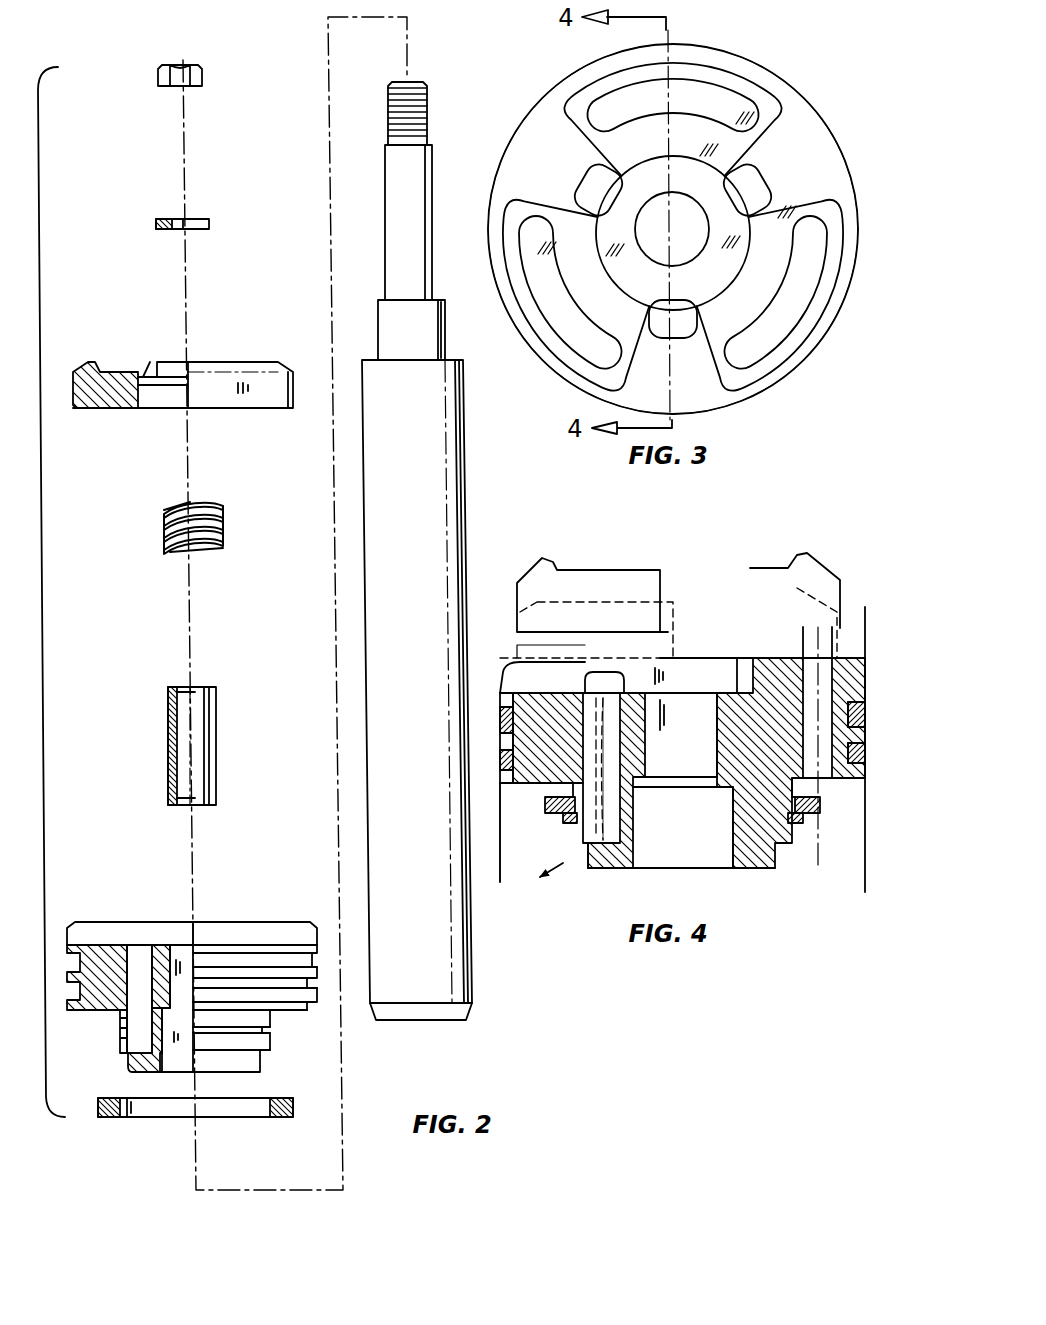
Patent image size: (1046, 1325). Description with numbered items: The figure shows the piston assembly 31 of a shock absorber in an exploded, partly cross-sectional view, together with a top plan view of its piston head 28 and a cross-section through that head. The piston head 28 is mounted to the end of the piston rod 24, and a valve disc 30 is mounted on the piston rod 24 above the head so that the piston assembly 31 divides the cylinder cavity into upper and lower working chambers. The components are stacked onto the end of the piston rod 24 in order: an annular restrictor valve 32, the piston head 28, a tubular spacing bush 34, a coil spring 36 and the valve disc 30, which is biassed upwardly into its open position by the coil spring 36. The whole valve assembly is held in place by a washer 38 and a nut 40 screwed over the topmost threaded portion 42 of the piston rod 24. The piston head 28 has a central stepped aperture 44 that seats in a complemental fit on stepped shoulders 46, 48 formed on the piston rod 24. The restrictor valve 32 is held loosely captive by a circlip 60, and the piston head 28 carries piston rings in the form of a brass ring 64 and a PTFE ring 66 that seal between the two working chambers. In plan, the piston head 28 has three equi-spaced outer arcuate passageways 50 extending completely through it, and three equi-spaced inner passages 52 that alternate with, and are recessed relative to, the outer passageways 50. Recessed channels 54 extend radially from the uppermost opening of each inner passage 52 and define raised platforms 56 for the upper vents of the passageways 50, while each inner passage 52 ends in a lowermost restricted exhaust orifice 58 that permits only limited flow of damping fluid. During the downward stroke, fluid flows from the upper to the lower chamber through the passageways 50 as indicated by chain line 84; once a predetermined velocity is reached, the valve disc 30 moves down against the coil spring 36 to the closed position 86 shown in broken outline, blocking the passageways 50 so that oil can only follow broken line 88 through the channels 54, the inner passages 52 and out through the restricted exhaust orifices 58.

In FIG. 2, the piston rod 24 is at (438, 512).
In FIG. 2, the piston head 28 is at (248, 922).
In FIG. 3, the piston head 28 is at (808, 88).
In FIG. 4, the piston head 28 is at (874, 652).
In FIG. 2, the valve disc 30 is at (283, 361).
In FIG. 4, the valve disc 30 is at (602, 588).
In FIG. 2, the piston assembly 31 is at (48, 592).
In FIG. 2, the annular restrictor valve 32 is at (290, 1118).
In FIG. 4, the annular restrictor valve 32 is at (822, 825).
In FIG. 2, the tubular spacing bush 34 is at (218, 770).
In FIG. 2, the coil spring 36 is at (222, 550).
In FIG. 2, the washer 38 is at (209, 229).
In FIG. 2, the nut 40 is at (204, 86).
In FIG. 2, the topmost threaded portion 42 is at (430, 104).
In FIG. 2, the central stepped aperture 44 is at (175, 1057).
In FIG. 2, the stepped shoulder 46 is at (378, 360).
In FIG. 2, the stepped shoulder 48 is at (386, 300).
In FIG. 3, the outer arcuate passageways 50 is at (768, 340).
In FIG. 4, the outer arcuate passageways 50 is at (822, 634).
In FIG. 3, the inner passages 52 is at (650, 312).
In FIG. 4, the inner passages 52 is at (612, 808).
In FIG. 3, the recessed channels 54 is at (697, 403).
In FIG. 3, the raised platforms 56 is at (673, 227).
In FIG. 4, the restricted exhaust orifice 58 is at (593, 820).
In FIG. 4, the circlip 60 is at (793, 838).
In FIG. 4, the brass ring 64 is at (865, 722).
In FIG. 4, the PTFE ring 66 is at (822, 776).
In FIG. 4, the chain line 84 is at (838, 838).
In FIG. 4, the closed position 86 is at (518, 646).
In FIG. 4, the broken line 88 is at (557, 676).